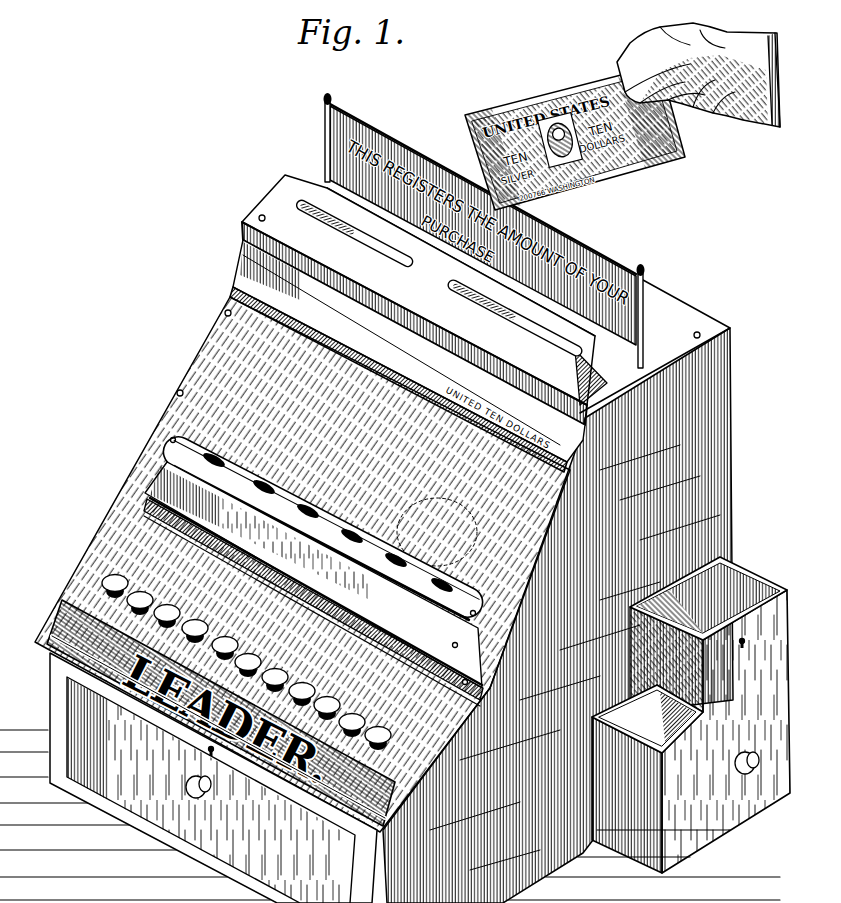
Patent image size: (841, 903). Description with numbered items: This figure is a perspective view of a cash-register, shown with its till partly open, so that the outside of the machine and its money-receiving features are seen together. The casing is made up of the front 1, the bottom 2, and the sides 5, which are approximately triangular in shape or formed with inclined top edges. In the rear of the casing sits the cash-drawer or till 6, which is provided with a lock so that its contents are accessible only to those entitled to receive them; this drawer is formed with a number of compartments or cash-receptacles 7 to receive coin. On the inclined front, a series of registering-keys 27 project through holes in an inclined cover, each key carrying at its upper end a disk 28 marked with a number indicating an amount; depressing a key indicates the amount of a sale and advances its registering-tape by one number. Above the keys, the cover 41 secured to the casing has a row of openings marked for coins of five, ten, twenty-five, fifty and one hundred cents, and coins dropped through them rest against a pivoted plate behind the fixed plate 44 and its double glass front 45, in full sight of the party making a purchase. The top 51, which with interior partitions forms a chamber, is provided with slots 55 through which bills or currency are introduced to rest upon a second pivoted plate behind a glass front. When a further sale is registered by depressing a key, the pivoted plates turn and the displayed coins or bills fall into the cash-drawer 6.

The front of the casing 1 is at (282, 600).
The bottom 2 is at (183, 857).
The sides 5 is at (567, 615).
The cash-drawer or till 6 is at (691, 731).
The compartments or cash-receptacles 7 is at (705, 712).
The registering-keys 27 is at (108, 590).
The disks 28 is at (161, 603).
The cover 41 is at (327, 520).
The fixed plate 44 is at (162, 479).
The double glass front 45 is at (313, 584).
The top 51 is at (424, 290).
The slots 55 is at (350, 240).